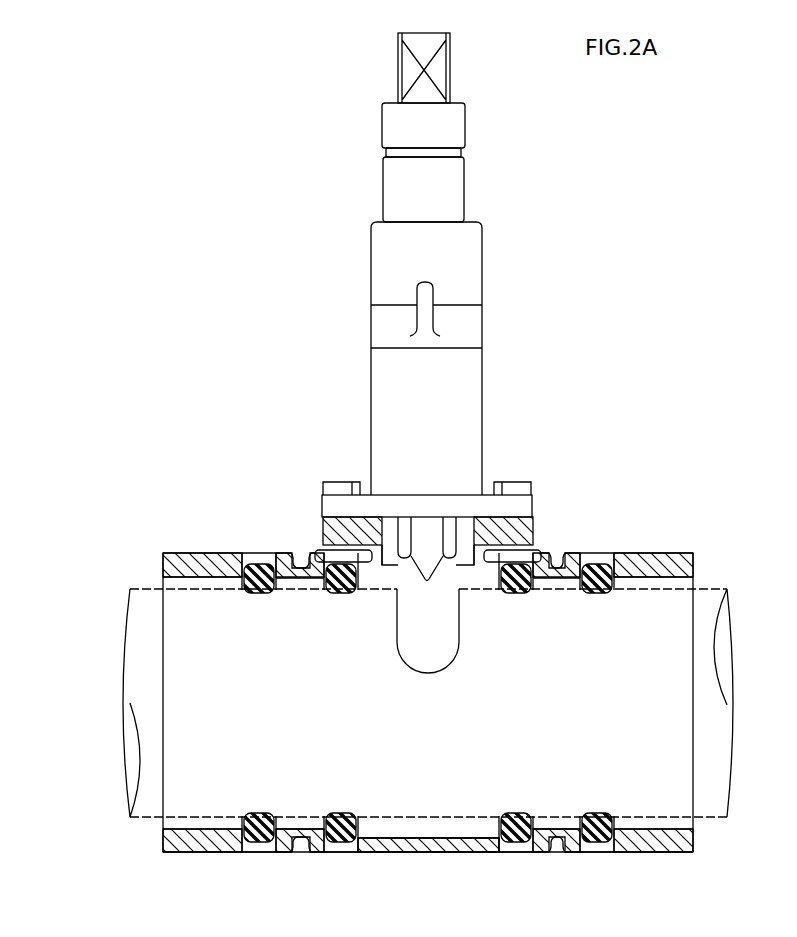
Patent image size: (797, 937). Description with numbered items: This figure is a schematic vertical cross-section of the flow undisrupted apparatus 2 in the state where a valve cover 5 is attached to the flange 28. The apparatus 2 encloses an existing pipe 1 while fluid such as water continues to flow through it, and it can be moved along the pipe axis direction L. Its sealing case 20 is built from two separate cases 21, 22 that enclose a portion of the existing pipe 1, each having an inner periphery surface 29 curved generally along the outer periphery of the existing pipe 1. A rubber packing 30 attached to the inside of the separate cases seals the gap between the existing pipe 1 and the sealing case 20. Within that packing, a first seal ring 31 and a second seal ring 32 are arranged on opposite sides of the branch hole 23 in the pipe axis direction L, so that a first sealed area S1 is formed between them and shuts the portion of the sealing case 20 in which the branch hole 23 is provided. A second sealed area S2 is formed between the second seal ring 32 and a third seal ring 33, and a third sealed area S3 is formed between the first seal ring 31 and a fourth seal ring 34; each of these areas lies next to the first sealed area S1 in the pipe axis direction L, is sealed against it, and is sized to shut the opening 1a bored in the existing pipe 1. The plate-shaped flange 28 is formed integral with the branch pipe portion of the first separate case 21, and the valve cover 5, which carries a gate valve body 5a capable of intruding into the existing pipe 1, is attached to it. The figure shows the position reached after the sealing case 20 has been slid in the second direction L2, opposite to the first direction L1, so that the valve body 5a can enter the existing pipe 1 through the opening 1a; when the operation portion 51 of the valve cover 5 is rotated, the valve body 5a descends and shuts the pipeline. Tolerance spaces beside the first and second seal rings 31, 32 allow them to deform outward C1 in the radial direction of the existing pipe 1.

The existing pipe 1 is at (717, 586).
The opening 1a is at (448, 640).
The apparatus 2 is at (308, 197).
The valve cover 5 is at (371, 258).
The valve body 5a is at (426, 530).
The sealing case 20 is at (165, 547).
The separate case 21 is at (200, 553).
The separate case 22 is at (215, 848).
The branch hole 23 is at (395, 550).
The flange 28 is at (537, 528).
The inner periphery surface 29 is at (458, 838).
The rubber packing 30 is at (652, 553).
The first seal ring 31 is at (341, 592).
The second seal ring 32 is at (514, 592).
The third seal ring 33 is at (598, 592).
The fourth seal ring 34 is at (260, 592).
The operation portion 51 is at (398, 66).
The first sealed area S1 is at (425, 830).
The second sealed area S2 is at (557, 825).
The third sealed area S3 is at (304, 825).
The outward radial direction C1 is at (557, 382).
The pipe axis direction L is at (790, 703).
The first direction L1 is at (675, 455).
The second direction L2 is at (250, 458).